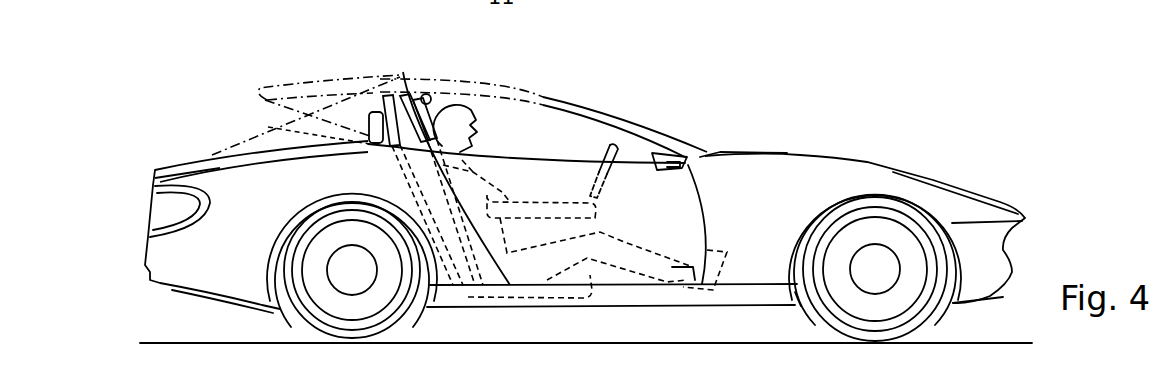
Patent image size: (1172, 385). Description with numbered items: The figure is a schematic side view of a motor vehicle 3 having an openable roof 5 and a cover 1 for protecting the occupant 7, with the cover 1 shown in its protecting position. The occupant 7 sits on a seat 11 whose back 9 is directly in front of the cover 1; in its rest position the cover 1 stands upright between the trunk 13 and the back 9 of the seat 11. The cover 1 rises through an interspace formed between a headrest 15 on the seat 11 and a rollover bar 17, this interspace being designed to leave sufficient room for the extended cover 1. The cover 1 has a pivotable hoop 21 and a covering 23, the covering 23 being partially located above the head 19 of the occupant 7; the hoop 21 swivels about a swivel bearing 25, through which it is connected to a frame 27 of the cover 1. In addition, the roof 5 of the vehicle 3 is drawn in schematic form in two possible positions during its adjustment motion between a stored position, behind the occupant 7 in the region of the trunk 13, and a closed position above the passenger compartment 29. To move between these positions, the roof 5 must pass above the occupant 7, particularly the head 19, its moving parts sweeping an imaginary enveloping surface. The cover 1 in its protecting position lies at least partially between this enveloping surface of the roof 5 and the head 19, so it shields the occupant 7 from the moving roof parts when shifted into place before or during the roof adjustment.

The cover 1 is at (413, 96).
The motor vehicle 3 is at (788, 173).
The roof 5 is at (377, 80).
The occupant 7 is at (512, 187).
The back 9 is at (462, 160).
The seat 11 is at (505, 290).
The trunk 13 is at (218, 173).
The headrest 15 is at (423, 133).
The rollover bar 17 is at (370, 132).
The head 19 is at (470, 118).
The hoop 21 is at (427, 95).
The covering 23 is at (397, 96).
The swivel bearing 25 is at (393, 147).
The frame 27 is at (383, 140).
The passenger compartment 29 is at (577, 143).